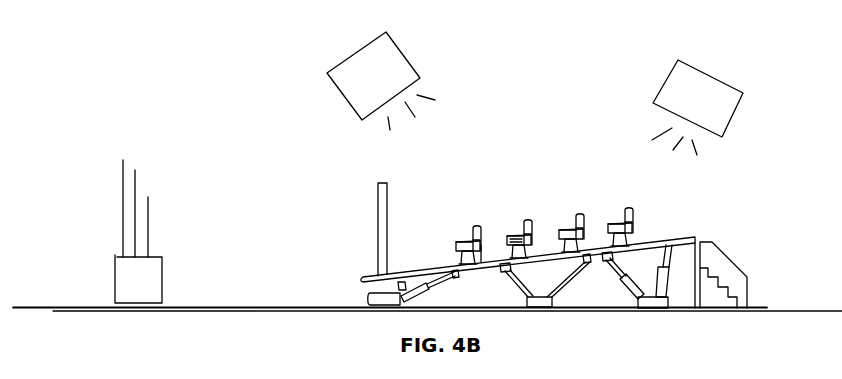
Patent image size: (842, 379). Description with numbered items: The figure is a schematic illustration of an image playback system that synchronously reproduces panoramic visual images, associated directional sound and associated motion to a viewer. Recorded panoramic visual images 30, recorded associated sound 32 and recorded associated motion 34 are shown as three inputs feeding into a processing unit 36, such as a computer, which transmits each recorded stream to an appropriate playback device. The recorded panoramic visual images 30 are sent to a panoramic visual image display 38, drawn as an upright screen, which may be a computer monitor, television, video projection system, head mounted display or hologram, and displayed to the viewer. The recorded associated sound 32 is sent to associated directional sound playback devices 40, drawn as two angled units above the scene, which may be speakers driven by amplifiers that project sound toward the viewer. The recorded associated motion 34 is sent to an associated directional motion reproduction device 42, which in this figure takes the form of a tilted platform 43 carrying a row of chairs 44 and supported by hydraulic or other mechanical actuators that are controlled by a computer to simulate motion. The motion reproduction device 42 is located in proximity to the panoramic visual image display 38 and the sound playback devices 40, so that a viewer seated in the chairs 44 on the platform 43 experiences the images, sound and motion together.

The recorded panoramic visual images 30 is at (126, 156).
The recorded associated sound 32 is at (138, 165).
The recorded associated motion 34 is at (151, 192).
The processing unit 36 is at (167, 255).
The panoramic visual image display 38 is at (409, 190).
The associated directional sound playback device 40 is at (333, 88).
The associated directional motion reproduction device 42 is at (666, 240).
The platform 43 is at (481, 262).
The chair 44 is at (529, 225).